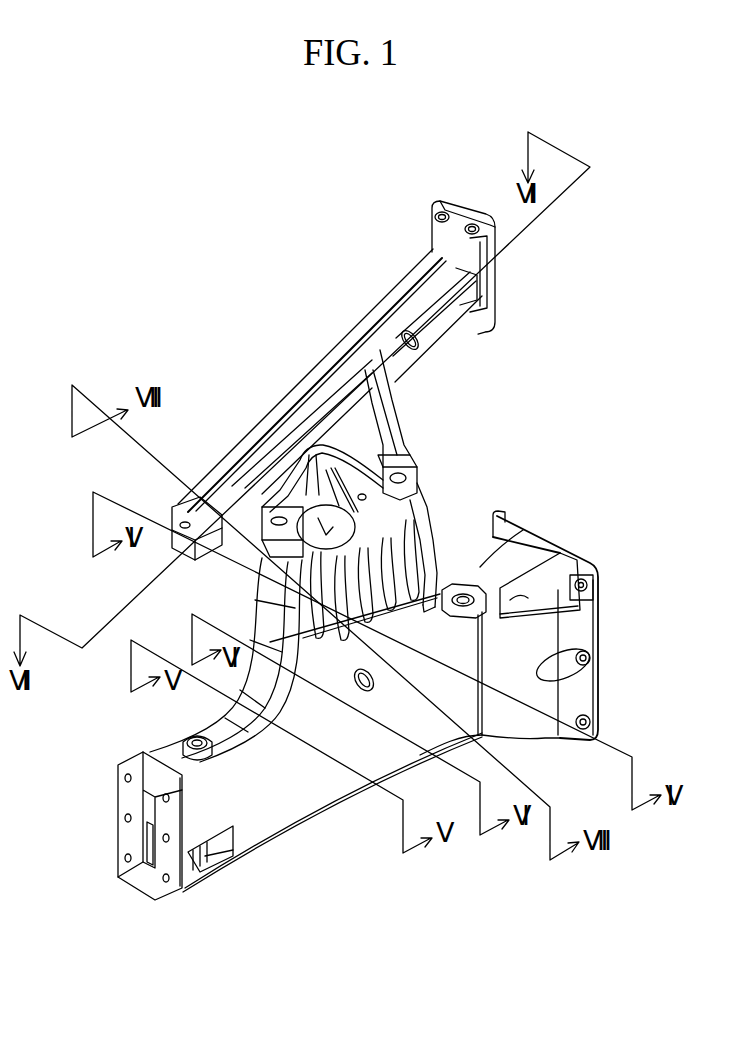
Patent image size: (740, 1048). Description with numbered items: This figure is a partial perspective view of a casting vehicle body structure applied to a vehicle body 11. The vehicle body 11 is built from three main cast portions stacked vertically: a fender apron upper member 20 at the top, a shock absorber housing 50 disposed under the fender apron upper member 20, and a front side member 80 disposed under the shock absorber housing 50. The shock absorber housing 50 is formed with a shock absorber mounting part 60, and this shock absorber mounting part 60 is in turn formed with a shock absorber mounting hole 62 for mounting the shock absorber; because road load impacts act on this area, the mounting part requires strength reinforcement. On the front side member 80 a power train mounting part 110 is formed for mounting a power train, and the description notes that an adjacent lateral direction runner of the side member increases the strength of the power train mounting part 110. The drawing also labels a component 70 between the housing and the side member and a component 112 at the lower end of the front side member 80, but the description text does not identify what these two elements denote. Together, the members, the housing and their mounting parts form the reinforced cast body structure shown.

The vehicle body 11 is at (325, 714).
The fender apron upper member 20 is at (253, 394).
The shock absorber housing 50 is at (350, 496).
The shock absorber mounting part 60 is at (321, 496).
The shock absorber mounting hole 62 is at (288, 488).
The curved arm 70 is at (277, 588).
The front side member 80 is at (331, 821).
The power train mounting part 110 is at (480, 590).
The tab 112 is at (215, 872).